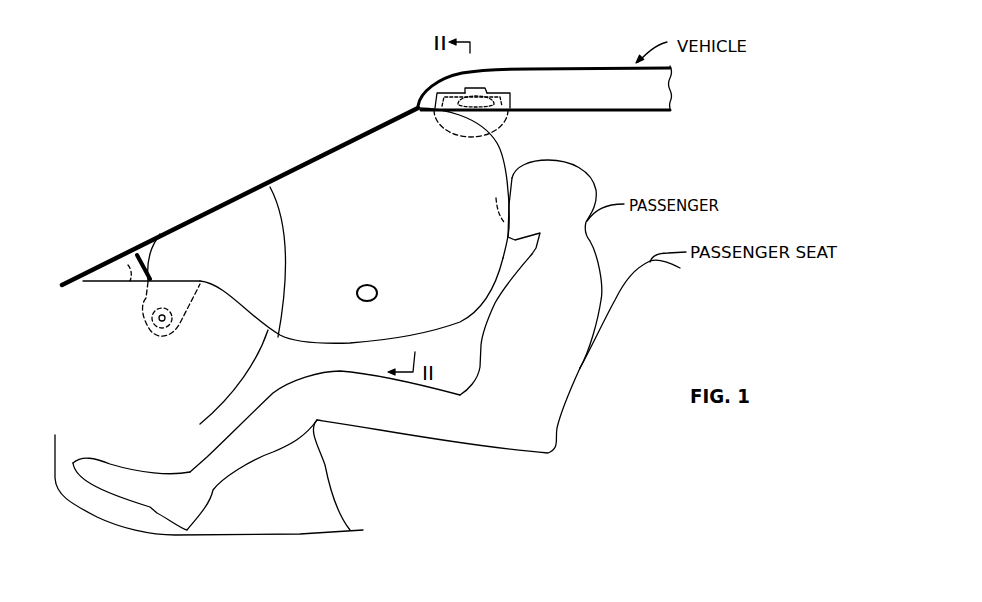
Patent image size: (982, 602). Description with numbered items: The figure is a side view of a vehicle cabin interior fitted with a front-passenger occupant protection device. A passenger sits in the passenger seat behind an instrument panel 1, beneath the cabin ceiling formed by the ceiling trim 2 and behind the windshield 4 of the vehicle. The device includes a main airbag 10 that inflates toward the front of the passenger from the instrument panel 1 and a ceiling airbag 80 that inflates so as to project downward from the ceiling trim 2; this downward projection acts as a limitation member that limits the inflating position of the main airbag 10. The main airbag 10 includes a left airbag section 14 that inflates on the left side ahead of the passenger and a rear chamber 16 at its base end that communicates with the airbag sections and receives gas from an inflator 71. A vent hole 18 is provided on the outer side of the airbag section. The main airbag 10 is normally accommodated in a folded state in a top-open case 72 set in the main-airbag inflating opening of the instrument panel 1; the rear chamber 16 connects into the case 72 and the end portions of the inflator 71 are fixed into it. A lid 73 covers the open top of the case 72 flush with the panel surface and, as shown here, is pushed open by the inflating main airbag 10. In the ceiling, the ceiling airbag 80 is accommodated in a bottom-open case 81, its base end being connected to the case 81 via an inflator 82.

The instrument panel 1 is at (112, 280).
The ceiling trim 2 is at (667, 110).
The windshield 4 is at (363, 137).
The main airbag 10 is at (352, 349).
The left airbag section 14 is at (488, 280).
The rear chamber 16 is at (227, 237).
The vent hole 18 is at (378, 289).
The inflator 71 is at (187, 313).
The case 72 is at (133, 308).
The lid 73 is at (130, 282).
The ceiling airbag 80 is at (503, 125).
The case 81 is at (510, 97).
The inflator 82 is at (488, 81).